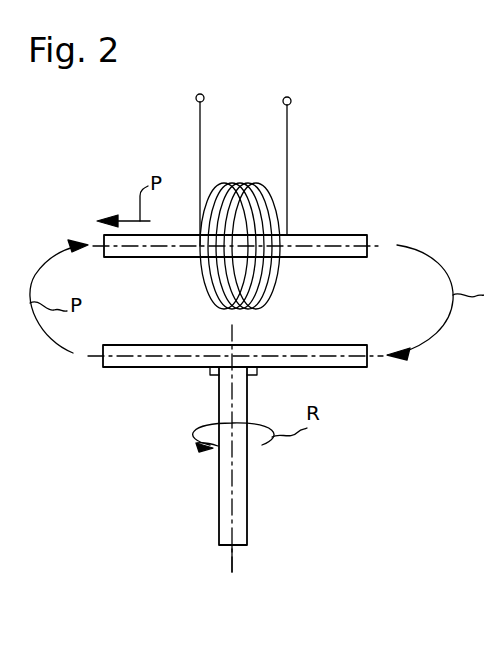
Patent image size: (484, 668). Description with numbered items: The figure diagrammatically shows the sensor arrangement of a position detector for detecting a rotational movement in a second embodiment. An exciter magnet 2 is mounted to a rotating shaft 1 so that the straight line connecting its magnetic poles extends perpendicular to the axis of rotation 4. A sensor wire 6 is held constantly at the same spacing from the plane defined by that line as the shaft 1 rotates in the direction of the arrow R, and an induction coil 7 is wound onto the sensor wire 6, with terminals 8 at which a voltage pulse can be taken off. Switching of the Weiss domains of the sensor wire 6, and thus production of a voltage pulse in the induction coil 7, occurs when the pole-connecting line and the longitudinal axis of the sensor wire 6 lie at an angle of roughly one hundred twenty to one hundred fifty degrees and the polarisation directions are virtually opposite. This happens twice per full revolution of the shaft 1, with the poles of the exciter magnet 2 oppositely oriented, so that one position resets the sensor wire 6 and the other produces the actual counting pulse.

The rotating shaft 1 is at (218, 493).
The exciter magnet 2 is at (160, 369).
The axis of rotation 4 is at (232, 562).
The sensor wire 6 is at (160, 258).
The induction coil 7 is at (245, 182).
The terminals 8 is at (196, 98).